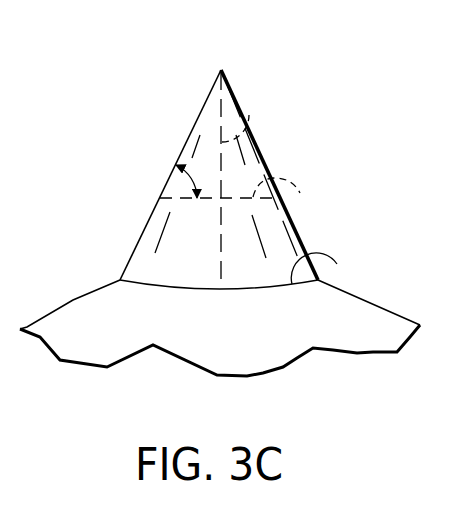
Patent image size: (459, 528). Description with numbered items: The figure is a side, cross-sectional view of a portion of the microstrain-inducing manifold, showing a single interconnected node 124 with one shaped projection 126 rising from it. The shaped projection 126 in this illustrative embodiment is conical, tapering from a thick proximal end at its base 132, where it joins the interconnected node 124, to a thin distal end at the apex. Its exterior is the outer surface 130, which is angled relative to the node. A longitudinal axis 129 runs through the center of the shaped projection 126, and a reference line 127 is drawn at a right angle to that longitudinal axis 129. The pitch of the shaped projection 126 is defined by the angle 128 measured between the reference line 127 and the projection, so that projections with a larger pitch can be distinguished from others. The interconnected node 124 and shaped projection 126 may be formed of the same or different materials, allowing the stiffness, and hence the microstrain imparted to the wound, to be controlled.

The interconnected node 124 is at (184, 347).
The shaped projection 126 is at (202, 132).
The reference line 127 is at (300, 193).
The angle 128 is at (169, 177).
The longitudinal axis 129 is at (250, 121).
The outer surface 130 is at (147, 223).
The base 132 is at (337, 264).